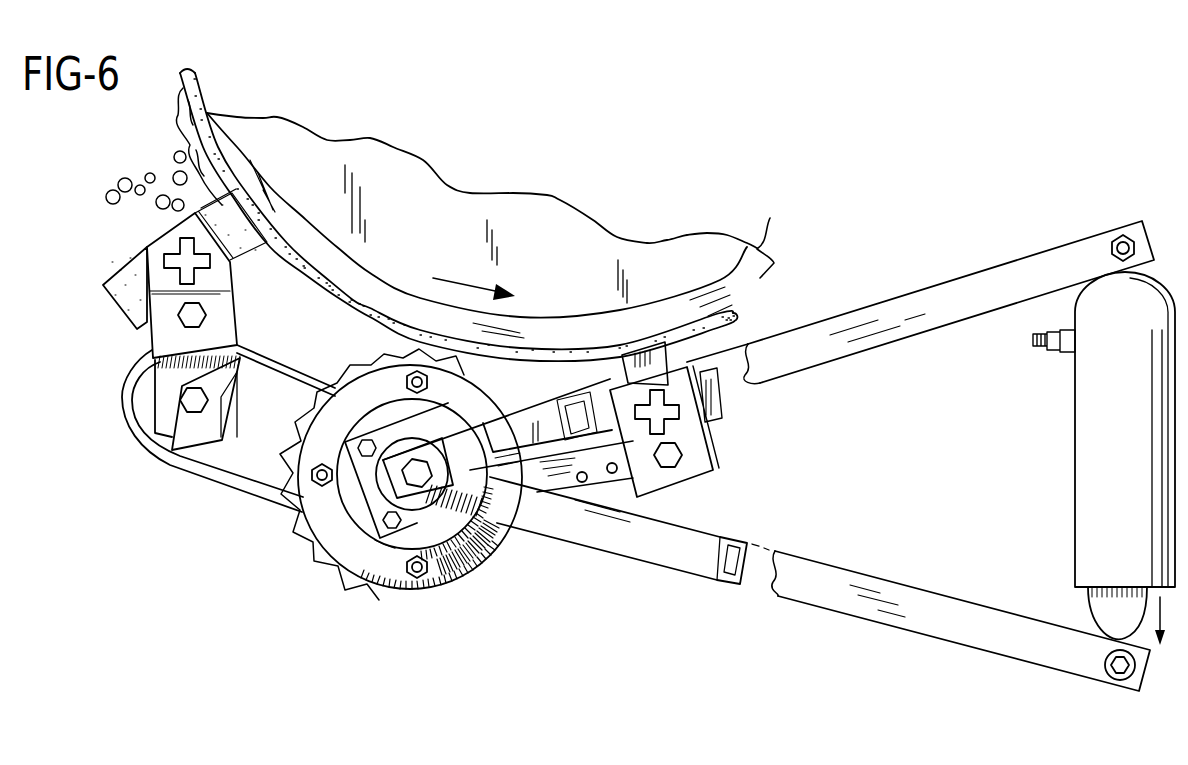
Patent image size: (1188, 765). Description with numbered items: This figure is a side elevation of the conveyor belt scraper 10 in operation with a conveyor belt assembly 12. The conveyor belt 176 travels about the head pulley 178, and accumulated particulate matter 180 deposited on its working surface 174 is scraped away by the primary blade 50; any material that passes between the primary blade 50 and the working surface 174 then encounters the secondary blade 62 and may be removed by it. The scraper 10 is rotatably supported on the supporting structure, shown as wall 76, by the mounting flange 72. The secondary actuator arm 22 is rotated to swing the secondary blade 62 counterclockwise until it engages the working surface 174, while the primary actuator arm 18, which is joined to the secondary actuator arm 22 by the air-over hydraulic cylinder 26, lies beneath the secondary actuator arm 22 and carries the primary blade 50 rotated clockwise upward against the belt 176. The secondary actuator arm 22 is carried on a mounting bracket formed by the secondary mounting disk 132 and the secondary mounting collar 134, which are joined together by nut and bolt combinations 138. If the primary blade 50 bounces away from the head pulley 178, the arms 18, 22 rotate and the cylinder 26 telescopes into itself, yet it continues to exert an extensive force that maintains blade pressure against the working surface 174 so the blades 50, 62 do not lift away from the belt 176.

The conveyor belt scraper 10 is at (215, 525).
The conveyor belt assembly 12 is at (603, 168).
The primary actuator arm 18 is at (850, 573).
The secondary actuator arm 22 is at (836, 355).
The air-over hydraulic cylinder 26 is at (1083, 472).
The primary blade 50 is at (108, 310).
The secondary blade 62 is at (736, 437).
The mounting flange 72 is at (318, 522).
The wall 76 is at (517, 558).
The secondary mounting disk 132 is at (482, 547).
The secondary mounting collar 134 is at (397, 549).
The nut and bolt combinations 138 is at (363, 440).
The working surface 174 is at (718, 332).
The conveyor belt 176 is at (733, 306).
The head pulley 178 is at (762, 258).
The particulate matter 180 is at (160, 158).